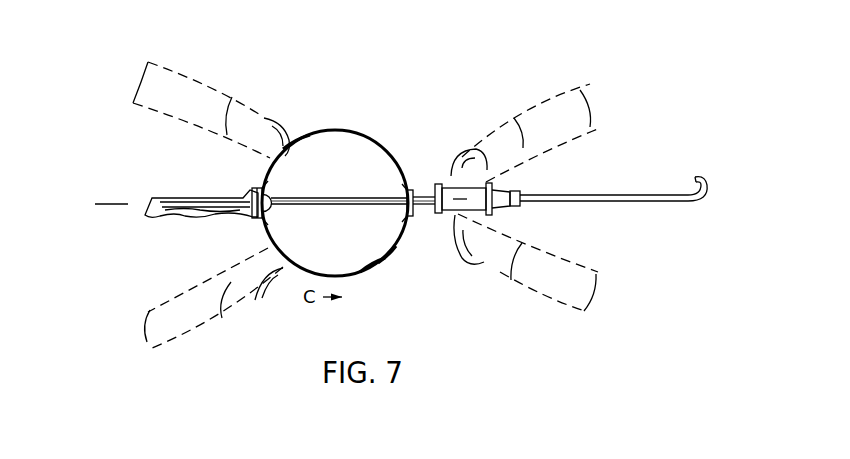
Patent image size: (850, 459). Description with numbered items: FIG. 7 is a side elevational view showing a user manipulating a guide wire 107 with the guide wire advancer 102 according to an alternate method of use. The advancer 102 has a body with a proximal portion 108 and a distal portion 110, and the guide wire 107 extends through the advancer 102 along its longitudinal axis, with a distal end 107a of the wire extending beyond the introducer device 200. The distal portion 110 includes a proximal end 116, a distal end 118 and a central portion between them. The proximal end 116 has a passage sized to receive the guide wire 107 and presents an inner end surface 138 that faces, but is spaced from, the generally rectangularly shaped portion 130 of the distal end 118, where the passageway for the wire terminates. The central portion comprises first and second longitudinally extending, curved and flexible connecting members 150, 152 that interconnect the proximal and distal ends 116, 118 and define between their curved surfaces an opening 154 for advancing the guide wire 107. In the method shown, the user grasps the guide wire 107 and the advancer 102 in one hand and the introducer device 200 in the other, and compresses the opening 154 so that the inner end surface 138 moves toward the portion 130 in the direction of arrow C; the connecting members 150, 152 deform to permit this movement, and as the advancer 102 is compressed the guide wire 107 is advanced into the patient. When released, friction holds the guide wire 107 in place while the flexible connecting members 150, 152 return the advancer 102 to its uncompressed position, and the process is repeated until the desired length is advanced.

The guide wire advancer 102 is at (335, 113).
The guide wire 107 is at (373, 206).
The hooked distal end of needle 107a is at (710, 176).
The proximal portion 108 is at (190, 218).
The distal portion 110 is at (385, 258).
The proximal end 116 is at (268, 184).
The distal end 118 is at (410, 219).
The generally rectangularly shaped portion 130 is at (404, 191).
The inner end surface 138 is at (266, 221).
The first connecting member 150 is at (308, 128).
The second connecting member 152 is at (373, 268).
The opening 154 is at (343, 153).
The introducer device 200 is at (522, 188).